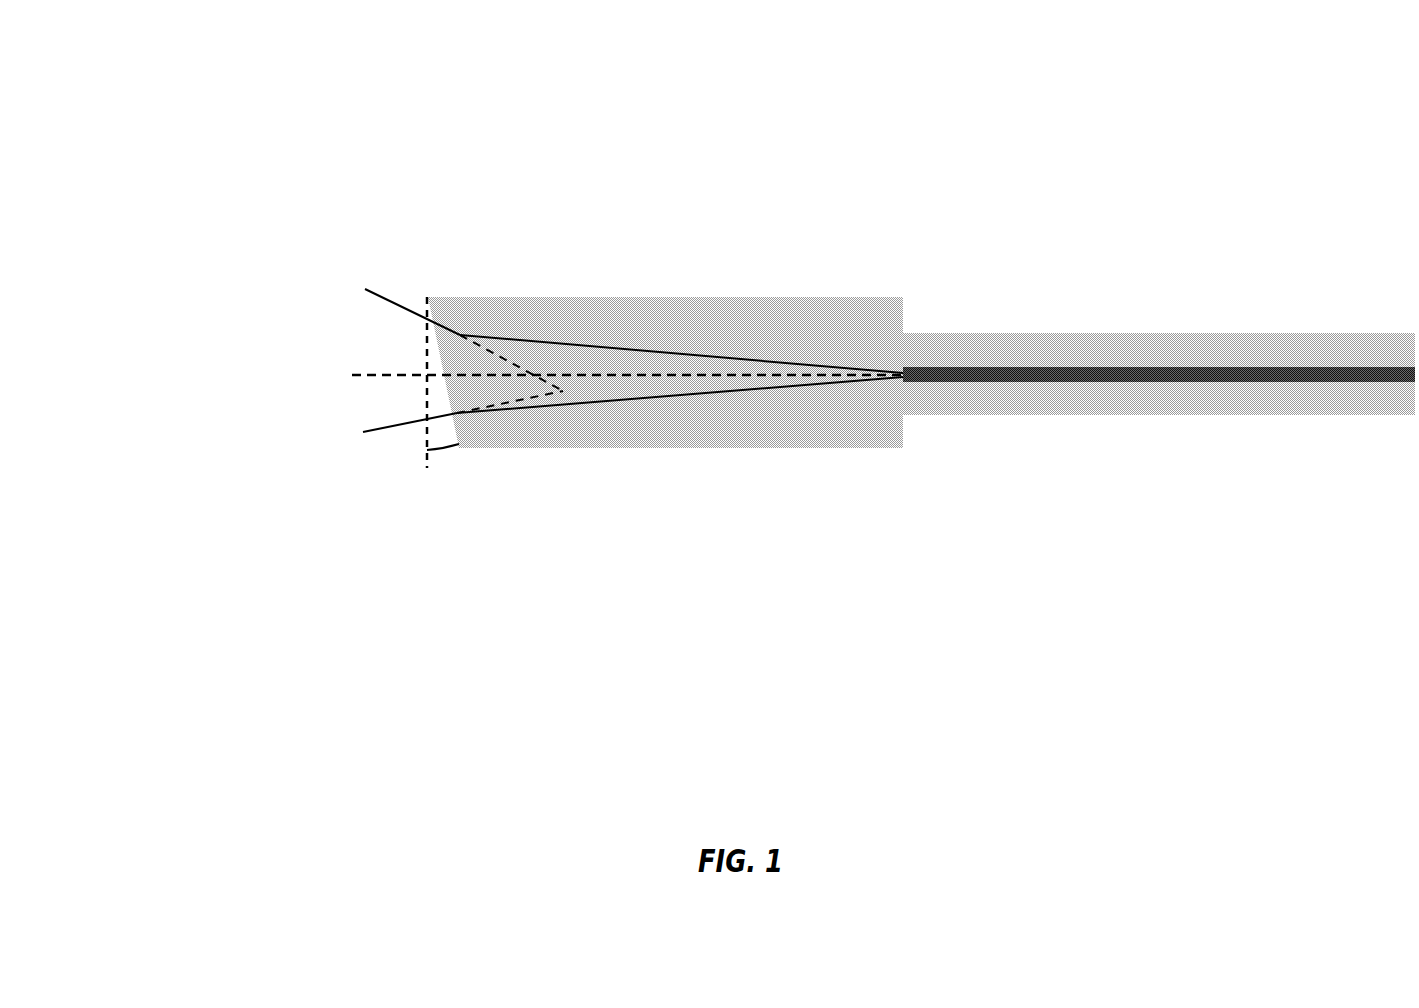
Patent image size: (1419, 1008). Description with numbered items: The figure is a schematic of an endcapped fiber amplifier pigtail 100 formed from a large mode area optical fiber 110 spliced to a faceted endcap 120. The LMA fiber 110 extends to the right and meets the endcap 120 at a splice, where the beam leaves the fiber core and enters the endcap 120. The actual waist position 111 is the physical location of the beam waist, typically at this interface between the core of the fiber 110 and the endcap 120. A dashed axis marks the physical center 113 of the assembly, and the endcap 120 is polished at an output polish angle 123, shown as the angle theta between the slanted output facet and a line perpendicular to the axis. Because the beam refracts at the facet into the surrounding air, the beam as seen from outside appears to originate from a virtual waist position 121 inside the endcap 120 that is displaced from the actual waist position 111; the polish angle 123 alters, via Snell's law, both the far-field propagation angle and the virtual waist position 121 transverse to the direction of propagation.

The endcapped fiber amplifier pigtail 100 is at (1219, 170).
The large mode area optical fiber 110 is at (1159, 350).
The actual waist position 111 is at (903, 384).
The physical center 113 is at (495, 395).
The faceted endcap 120 is at (665, 351).
The virtual waist position 121 is at (568, 398).
The output polish angle 123 is at (448, 484).